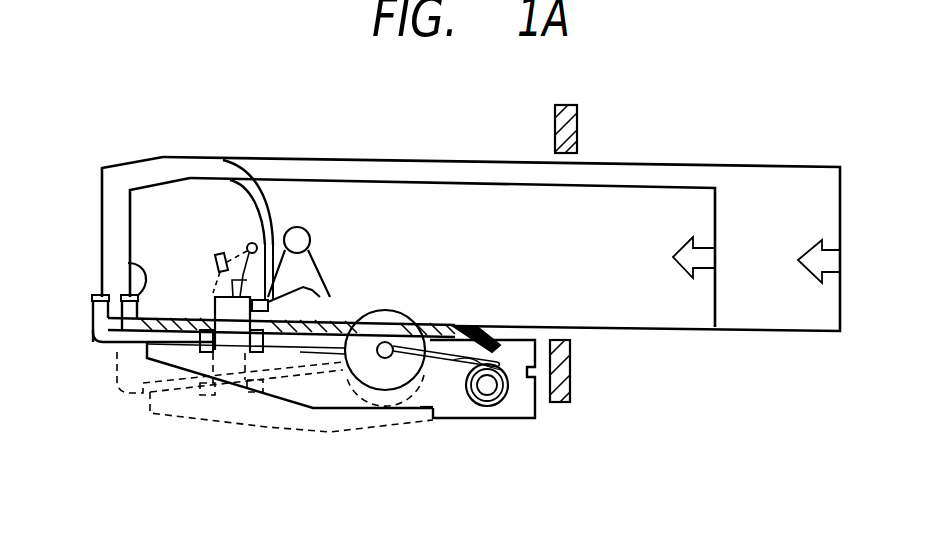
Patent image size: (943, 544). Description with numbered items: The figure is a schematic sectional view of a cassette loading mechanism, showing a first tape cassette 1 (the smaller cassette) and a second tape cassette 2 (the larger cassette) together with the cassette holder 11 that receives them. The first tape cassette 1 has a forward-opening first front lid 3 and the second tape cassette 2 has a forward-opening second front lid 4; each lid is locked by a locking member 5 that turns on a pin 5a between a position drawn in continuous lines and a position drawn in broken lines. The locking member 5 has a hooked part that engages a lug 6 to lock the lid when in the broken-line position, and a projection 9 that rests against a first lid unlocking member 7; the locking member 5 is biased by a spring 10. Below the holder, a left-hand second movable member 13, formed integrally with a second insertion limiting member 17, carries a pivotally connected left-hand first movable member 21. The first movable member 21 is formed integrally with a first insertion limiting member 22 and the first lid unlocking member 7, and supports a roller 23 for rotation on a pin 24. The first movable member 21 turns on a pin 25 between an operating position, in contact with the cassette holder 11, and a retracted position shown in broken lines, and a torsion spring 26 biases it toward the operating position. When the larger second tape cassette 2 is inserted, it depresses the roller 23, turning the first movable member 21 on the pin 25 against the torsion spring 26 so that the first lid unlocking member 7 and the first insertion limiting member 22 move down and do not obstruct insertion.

The first tape cassette 1 is at (613, 197).
The second tape cassette 2 is at (707, 167).
The first front lid 3 is at (150, 187).
The second front lid 4 is at (175, 157).
The locking member 5 is at (275, 240).
The pin 5a is at (250, 243).
The lug 6 is at (217, 253).
The first lid unlocking member 7 is at (213, 307).
The projection 9 is at (305, 287).
The spring 10 is at (312, 250).
The cassette holder 11 is at (488, 328).
The left-hand second movable member 13 is at (525, 420).
The second insertion limiting member 17 is at (93, 328).
The left-hand first movable member 21 is at (283, 402).
The first insertion limiting member 22 is at (100, 263).
The roller 23 is at (386, 345).
The pin 24 is at (390, 342).
The pin 25 is at (487, 385).
The torsion spring 26 is at (435, 380).